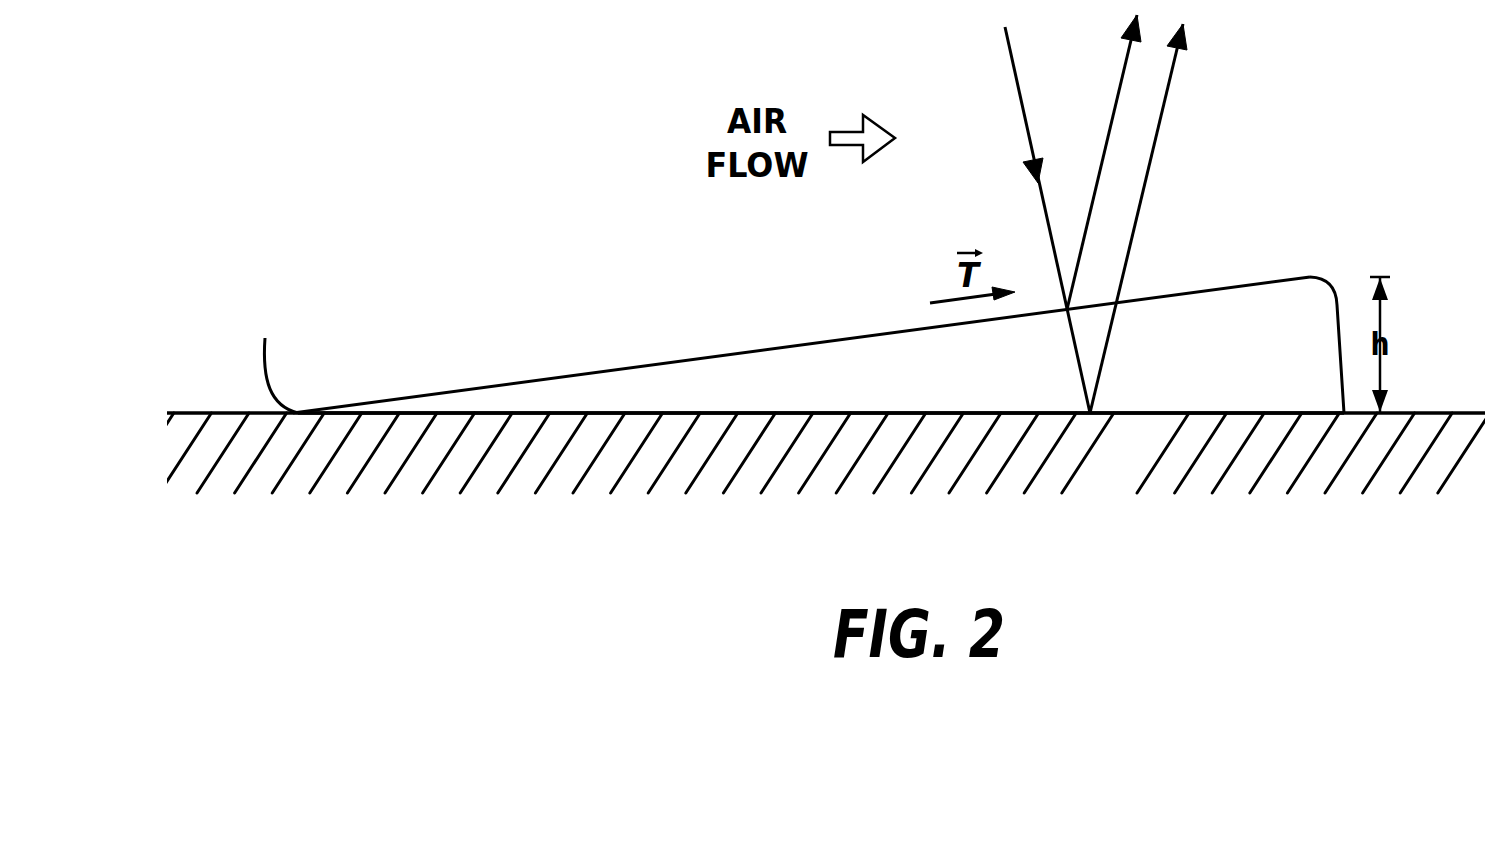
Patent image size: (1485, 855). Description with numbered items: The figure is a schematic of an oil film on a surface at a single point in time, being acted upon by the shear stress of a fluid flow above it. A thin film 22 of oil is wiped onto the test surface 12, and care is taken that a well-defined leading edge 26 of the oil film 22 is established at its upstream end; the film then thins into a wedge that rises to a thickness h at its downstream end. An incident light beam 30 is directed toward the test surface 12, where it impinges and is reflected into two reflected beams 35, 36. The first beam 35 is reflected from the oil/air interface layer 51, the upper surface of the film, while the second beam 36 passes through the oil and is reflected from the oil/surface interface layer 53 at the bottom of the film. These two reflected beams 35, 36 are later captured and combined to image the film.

The test surface 12 is at (1099, 469).
The thin film of oil 22 is at (1316, 288).
The leading edge 26 is at (278, 355).
The incident light beam 30 is at (1028, 135).
The first reflected beam 35 is at (1107, 132).
The second reflected beam 36 is at (1158, 125).
The oil/air interface layer 51 is at (1226, 288).
The oil/surface interface layer 53 is at (1244, 413).